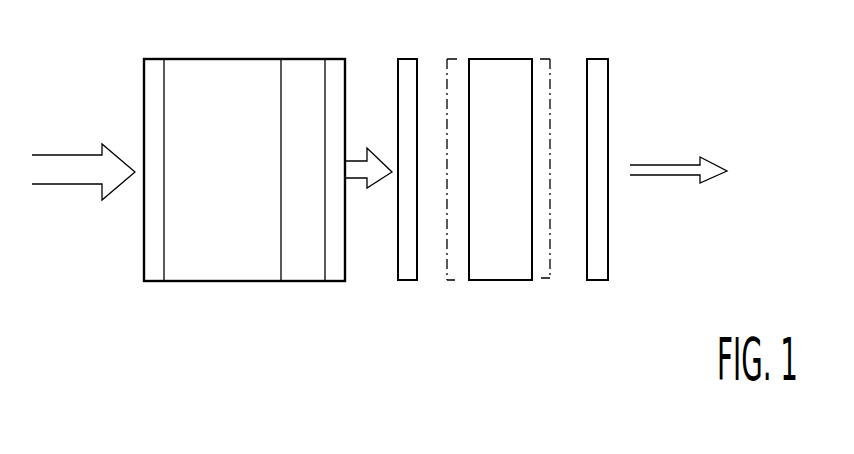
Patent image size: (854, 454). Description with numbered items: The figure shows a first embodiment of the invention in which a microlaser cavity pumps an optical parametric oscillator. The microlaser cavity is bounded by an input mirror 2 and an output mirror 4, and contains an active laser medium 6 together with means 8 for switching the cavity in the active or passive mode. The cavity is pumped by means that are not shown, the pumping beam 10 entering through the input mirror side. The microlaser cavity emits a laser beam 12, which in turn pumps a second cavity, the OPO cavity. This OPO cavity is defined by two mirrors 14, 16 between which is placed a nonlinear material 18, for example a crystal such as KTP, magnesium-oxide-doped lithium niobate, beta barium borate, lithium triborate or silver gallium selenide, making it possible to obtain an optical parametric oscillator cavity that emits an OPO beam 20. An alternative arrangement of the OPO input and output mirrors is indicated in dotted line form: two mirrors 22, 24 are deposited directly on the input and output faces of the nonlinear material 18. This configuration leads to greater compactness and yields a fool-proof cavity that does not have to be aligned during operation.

The input mirror 2 is at (153, 63).
The output mirror 4 is at (335, 281).
The active laser medium 6 is at (208, 280).
The switching means 8 is at (297, 63).
The pumping beam 10 is at (82, 181).
The laser beam 12 is at (363, 179).
The OPO cavity mirror 14 is at (407, 65).
The OPO cavity mirror 16 is at (597, 279).
The nonlinear material 18 is at (497, 65).
The OPO beam 20 is at (678, 200).
The mirror deposited on input face 22 is at (455, 280).
The mirror deposited on output face 24 is at (541, 279).